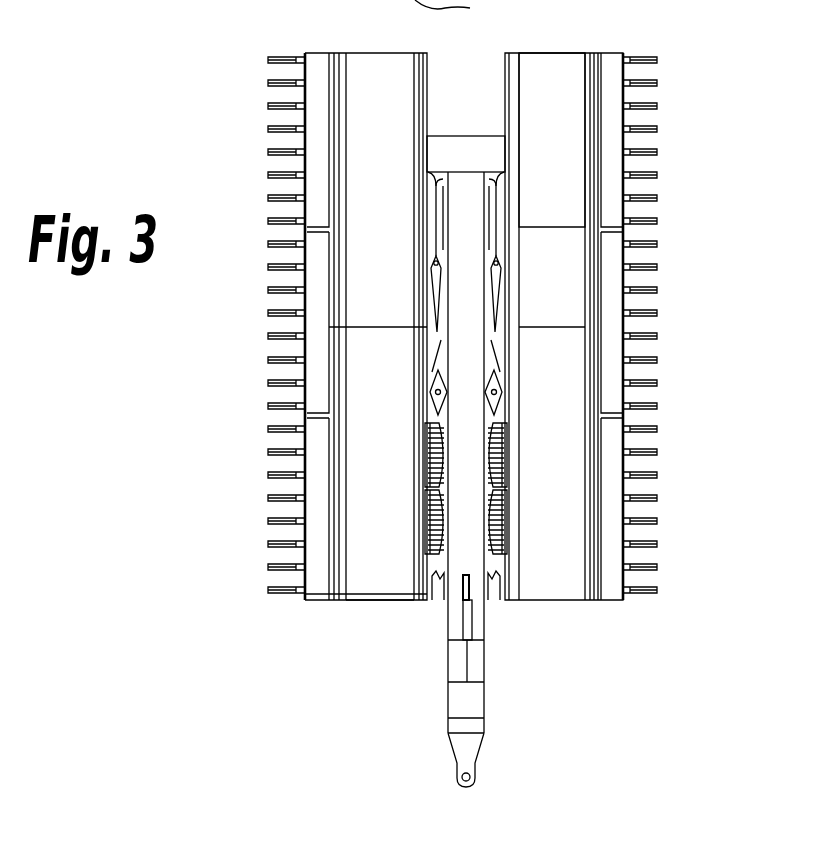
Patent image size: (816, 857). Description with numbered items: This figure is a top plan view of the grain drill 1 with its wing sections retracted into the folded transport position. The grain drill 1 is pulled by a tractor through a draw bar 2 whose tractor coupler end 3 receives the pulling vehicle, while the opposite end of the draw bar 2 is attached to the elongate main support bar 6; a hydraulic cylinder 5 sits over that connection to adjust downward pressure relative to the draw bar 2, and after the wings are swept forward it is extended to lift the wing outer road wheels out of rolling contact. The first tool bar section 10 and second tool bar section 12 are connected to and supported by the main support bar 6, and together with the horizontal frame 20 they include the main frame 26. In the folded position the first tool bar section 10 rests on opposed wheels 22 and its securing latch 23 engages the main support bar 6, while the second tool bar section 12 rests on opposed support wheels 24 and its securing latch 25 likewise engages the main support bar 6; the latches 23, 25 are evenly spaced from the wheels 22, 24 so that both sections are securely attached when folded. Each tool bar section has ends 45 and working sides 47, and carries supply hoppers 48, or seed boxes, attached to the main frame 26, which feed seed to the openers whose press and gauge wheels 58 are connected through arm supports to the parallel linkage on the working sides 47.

The grain drill 1 is at (706, 215).
The draw bar 2 is at (485, 704).
The tractor coupler end 3 is at (478, 746).
The hydraulic cylinder 5 is at (472, 623).
The main support bar 6 is at (470, 296).
The first tool bar wing section 10 is at (305, 341).
The second tool bar wing section 12 is at (622, 396).
The horizontal frame 20 is at (442, 136).
The opposed wheels 22 is at (452, 526).
The securing latch 23 is at (432, 462).
The opposed support wheels 24 is at (480, 528).
The securing latch 25 is at (495, 468).
The main frame 26 is at (384, 600).
The ends 45 is at (357, 600).
The working sides 47 is at (641, 137).
The supply hoppers 48 is at (549, 56).
The press and gauge wheels 58 is at (641, 58).